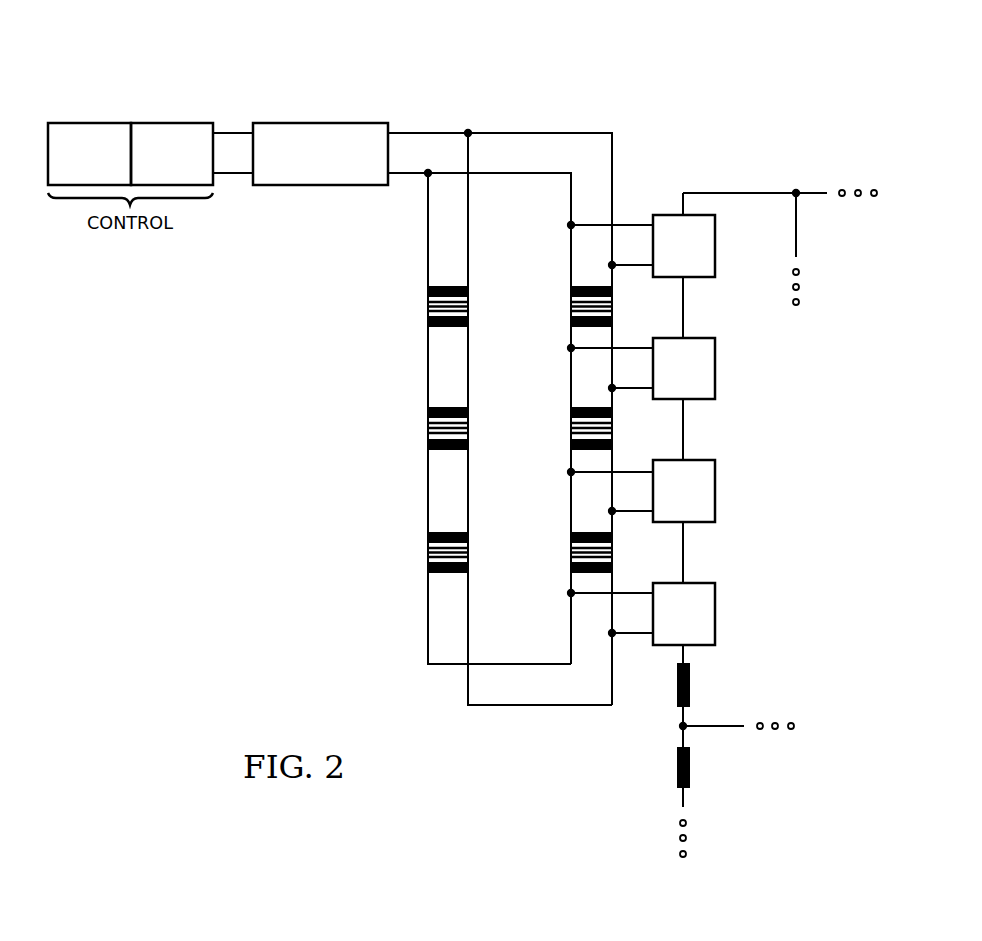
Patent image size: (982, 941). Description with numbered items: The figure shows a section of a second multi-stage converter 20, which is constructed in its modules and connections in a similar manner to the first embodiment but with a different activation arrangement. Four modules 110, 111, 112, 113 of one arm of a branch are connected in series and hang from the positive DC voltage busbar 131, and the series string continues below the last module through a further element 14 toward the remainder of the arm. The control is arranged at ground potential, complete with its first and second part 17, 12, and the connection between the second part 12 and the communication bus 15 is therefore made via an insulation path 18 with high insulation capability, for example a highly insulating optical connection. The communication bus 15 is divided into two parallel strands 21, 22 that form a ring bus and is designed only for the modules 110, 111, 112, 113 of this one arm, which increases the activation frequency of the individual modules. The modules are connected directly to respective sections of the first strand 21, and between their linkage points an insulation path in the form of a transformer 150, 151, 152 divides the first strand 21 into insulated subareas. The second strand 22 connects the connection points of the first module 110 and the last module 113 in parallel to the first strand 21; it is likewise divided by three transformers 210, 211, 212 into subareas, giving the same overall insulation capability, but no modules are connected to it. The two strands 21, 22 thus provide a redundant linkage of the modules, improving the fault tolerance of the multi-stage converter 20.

The first part of the control 17 is at (67, 127).
The second part of the control 12 is at (151, 127).
The insulation path 18 is at (319, 121).
The communication bus 15 is at (618, 77).
The second strand 22 is at (480, 116).
The first strand 21 is at (560, 116).
The transformer 210 is at (423, 306).
The transformer 211 is at (423, 431).
The transformer 212 is at (423, 553).
The transformer 150 is at (566, 306).
The transformer 151 is at (566, 430).
The transformer 152 is at (566, 553).
The module 110 is at (715, 246).
The module 111 is at (715, 368).
The module 112 is at (715, 492).
The module 113 is at (715, 615).
The positive DC voltage busbar 131 is at (737, 192).
The second multi-stage converter 20 is at (819, 314).
The battery string 14 is at (712, 728).